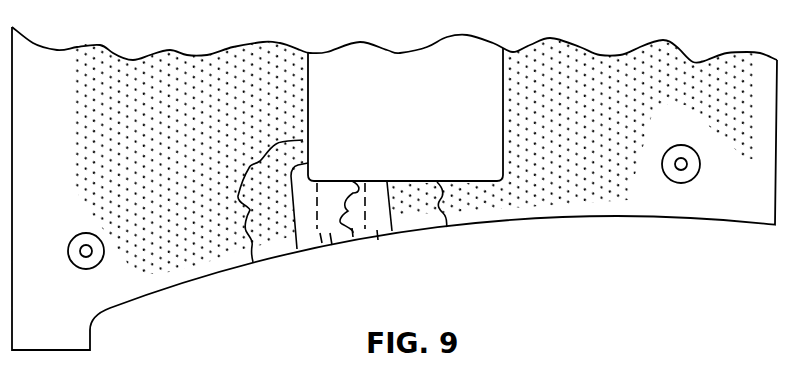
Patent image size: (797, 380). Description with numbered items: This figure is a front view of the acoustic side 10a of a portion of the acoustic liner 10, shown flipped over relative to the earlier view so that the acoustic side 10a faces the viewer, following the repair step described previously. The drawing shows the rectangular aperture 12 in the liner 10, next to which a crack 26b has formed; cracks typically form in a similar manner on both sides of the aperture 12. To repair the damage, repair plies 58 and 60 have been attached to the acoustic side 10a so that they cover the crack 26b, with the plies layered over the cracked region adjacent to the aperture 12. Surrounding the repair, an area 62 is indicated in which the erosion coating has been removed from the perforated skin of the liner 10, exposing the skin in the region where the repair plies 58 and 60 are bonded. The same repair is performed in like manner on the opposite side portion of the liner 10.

The liner 10 is at (504, 298).
The acoustic side 10a is at (63, 220).
The aperture 12 is at (482, 178).
The crack 26b is at (352, 181).
The repair ply 58 is at (357, 238).
The repair ply 60 is at (310, 238).
The area 62 is at (273, 238).